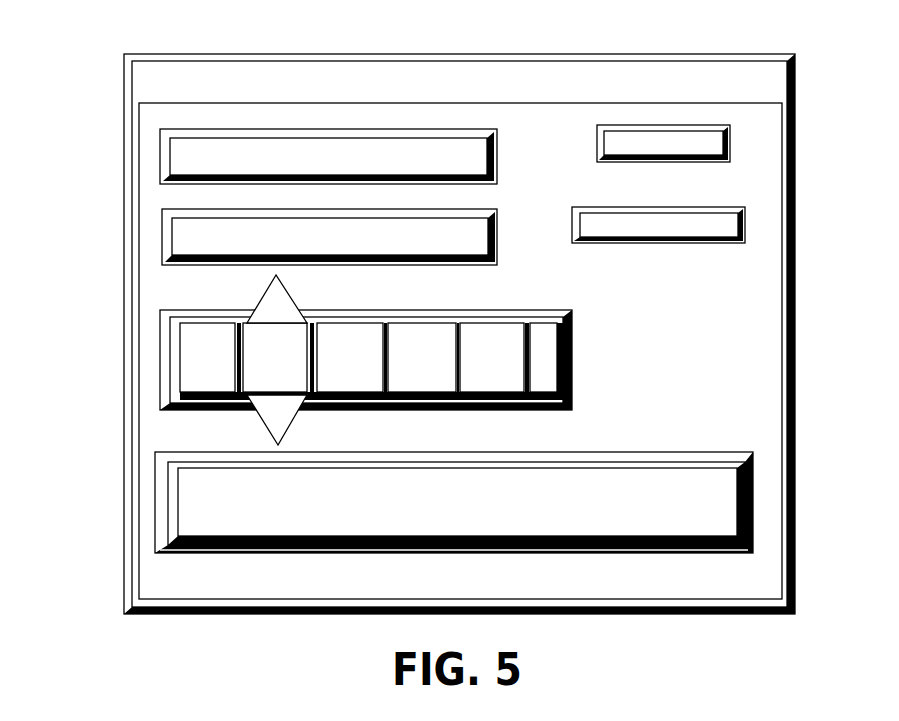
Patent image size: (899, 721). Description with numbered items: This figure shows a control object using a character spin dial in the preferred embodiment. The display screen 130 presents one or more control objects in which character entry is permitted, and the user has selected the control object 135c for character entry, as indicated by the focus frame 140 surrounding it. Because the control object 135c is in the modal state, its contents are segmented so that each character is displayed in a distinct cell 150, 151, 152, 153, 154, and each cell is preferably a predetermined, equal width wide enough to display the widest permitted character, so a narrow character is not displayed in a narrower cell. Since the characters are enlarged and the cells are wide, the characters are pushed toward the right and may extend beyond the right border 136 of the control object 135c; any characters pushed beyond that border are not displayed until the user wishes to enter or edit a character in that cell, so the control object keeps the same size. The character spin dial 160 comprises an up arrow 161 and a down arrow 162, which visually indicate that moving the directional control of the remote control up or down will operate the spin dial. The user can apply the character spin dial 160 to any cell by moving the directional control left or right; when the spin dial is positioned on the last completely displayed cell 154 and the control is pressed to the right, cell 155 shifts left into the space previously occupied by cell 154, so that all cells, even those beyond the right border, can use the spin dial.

The display screen 130 is at (97, 58).
The control object 135c is at (155, 320).
The right border 136 is at (555, 353).
The focus frame 140 is at (163, 350).
The cell 150 is at (187, 380).
The cell 151 is at (248, 386).
The cell 152 is at (352, 382).
The cell 153 is at (438, 382).
The cell 154 is at (505, 382).
The cell 155 is at (550, 380).
The character spin dial 160 is at (248, 296).
The up arrow 161 is at (284, 300).
The down arrow 162 is at (268, 412).